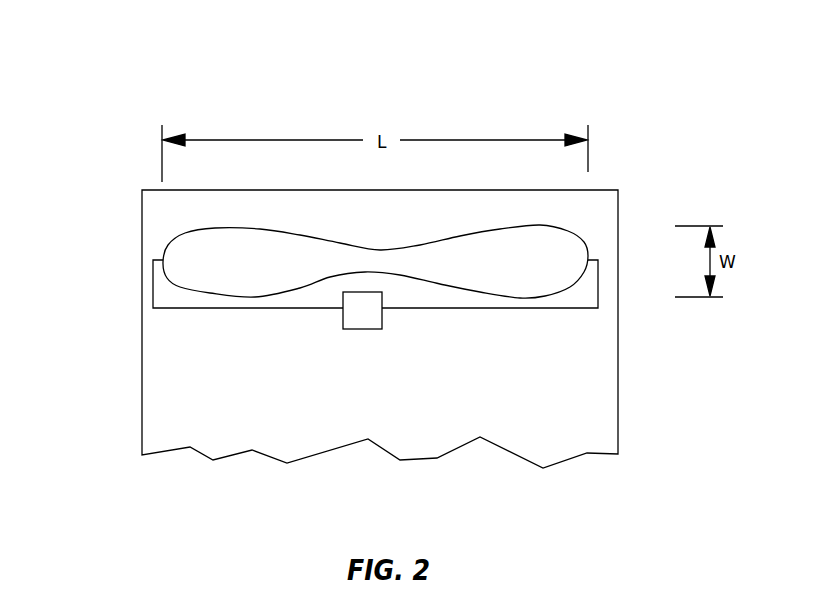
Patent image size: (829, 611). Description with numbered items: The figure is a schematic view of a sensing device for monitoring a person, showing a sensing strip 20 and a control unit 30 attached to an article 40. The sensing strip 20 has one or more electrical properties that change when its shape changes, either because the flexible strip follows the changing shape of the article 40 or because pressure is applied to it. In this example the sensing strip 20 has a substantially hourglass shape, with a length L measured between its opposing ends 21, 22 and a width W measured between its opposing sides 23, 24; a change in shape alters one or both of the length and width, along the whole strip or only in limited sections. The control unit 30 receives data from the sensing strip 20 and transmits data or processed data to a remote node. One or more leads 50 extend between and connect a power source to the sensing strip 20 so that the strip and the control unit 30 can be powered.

The sensing strip 20 is at (360, 275).
The first end of sensing strip 21 is at (165, 252).
The second end of sensing strip 22 is at (588, 252).
The first side of sensing strip 23 is at (217, 229).
The second side of sensing strip 24 is at (203, 293).
The control unit 30 is at (362, 313).
The article 40 is at (590, 415).
The leads 50 is at (270, 310).